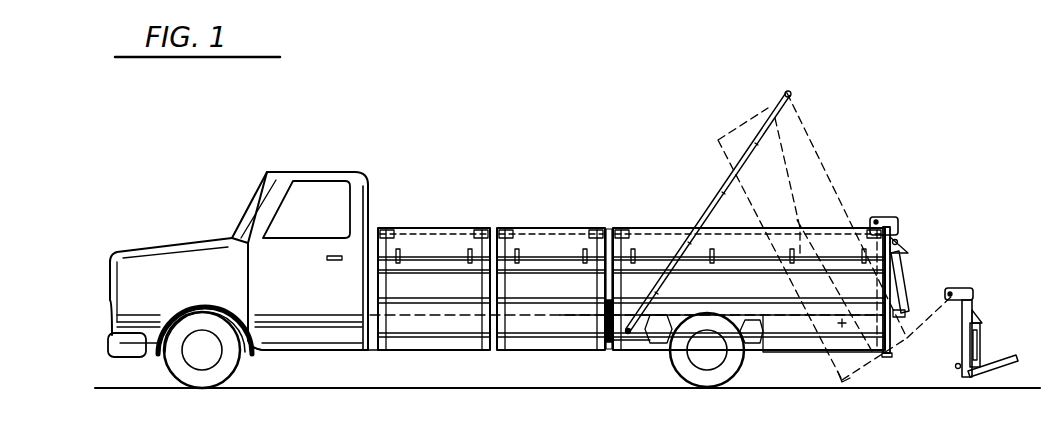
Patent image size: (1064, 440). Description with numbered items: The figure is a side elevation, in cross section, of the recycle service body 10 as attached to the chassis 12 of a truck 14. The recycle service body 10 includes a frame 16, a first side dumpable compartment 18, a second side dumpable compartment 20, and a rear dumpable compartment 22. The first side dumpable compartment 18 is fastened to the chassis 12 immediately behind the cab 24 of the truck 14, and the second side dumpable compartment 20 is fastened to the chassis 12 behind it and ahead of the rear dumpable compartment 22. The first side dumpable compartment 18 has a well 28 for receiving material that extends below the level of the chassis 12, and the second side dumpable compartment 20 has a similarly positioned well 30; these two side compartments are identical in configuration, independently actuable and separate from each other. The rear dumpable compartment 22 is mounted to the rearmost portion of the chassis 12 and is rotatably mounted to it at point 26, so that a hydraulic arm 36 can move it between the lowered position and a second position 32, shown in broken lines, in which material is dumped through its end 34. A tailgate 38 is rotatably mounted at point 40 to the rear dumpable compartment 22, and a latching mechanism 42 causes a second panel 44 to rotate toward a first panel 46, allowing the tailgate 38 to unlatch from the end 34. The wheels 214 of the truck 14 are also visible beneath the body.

The recycle service body 10 is at (540, 128).
The chassis 12 is at (372, 352).
The truck 14 is at (355, 172).
The frame 16 is at (612, 345).
The first side dumpable compartment 18 is at (420, 240).
The second side dumpable compartment 20 is at (532, 238).
The rear dumpable compartment 22 is at (660, 238).
The cab 24 is at (258, 257).
The point 26 is at (842, 323).
The well 28 is at (450, 340).
The well 30 is at (565, 340).
The second position 32 is at (850, 150).
The end 34 is at (910, 341).
The hydraulic arm 36 is at (718, 196).
The tailgate 38 is at (972, 313).
The point 40 is at (898, 218).
The latching mechanism 42 is at (903, 278).
The second panel 44 is at (1000, 367).
The first panel 46 is at (897, 243).
The wheels 214 is at (705, 388).